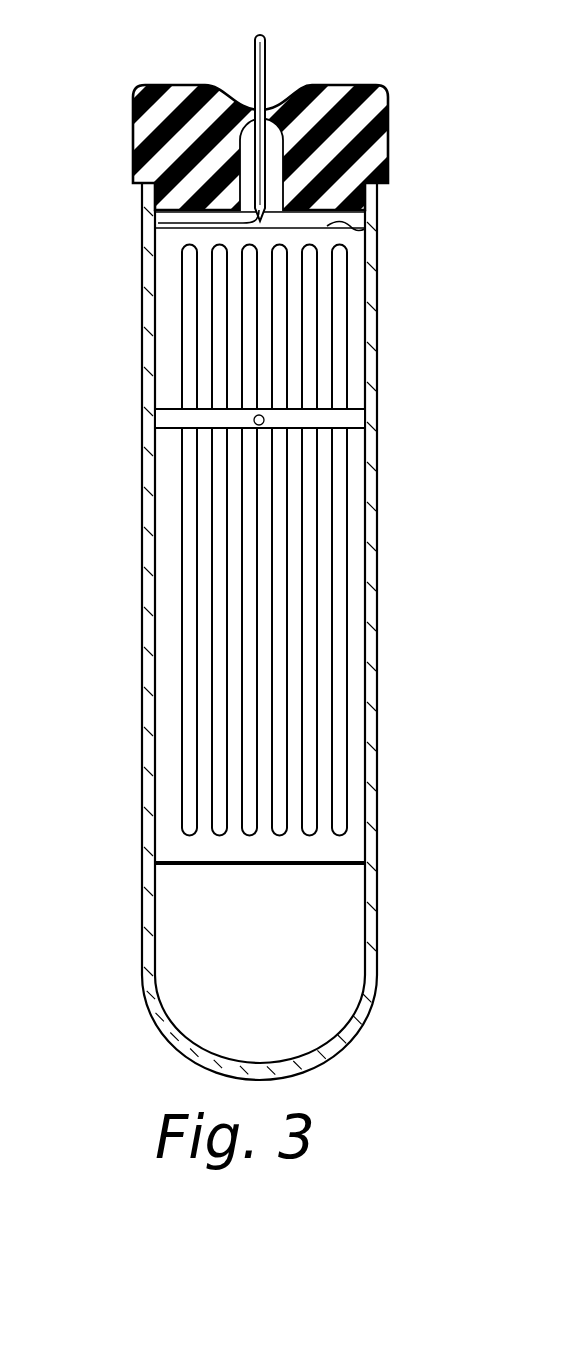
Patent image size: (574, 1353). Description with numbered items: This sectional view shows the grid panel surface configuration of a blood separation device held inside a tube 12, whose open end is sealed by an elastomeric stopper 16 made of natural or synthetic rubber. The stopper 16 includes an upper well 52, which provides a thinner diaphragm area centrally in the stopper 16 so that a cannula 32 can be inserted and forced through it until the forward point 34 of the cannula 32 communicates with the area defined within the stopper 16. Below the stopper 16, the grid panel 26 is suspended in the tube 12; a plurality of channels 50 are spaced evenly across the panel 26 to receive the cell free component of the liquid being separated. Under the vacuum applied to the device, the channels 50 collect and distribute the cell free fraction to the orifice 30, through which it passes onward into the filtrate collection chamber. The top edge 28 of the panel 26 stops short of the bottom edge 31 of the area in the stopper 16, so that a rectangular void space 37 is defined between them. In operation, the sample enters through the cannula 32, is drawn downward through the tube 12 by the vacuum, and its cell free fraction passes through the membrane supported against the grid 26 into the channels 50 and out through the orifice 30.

The tube 12 is at (382, 938).
The elastomeric stopper 16 is at (383, 112).
The grid 26 is at (295, 853).
The top edge 28 is at (362, 236).
The orifice 30 is at (264, 420).
The bottom edge 31 is at (350, 227).
The cannula 32 is at (265, 58).
The forward point 34 is at (160, 222).
The rectangular void space 37 is at (180, 223).
The channels 50 is at (188, 347).
The upper well 52 is at (226, 96).